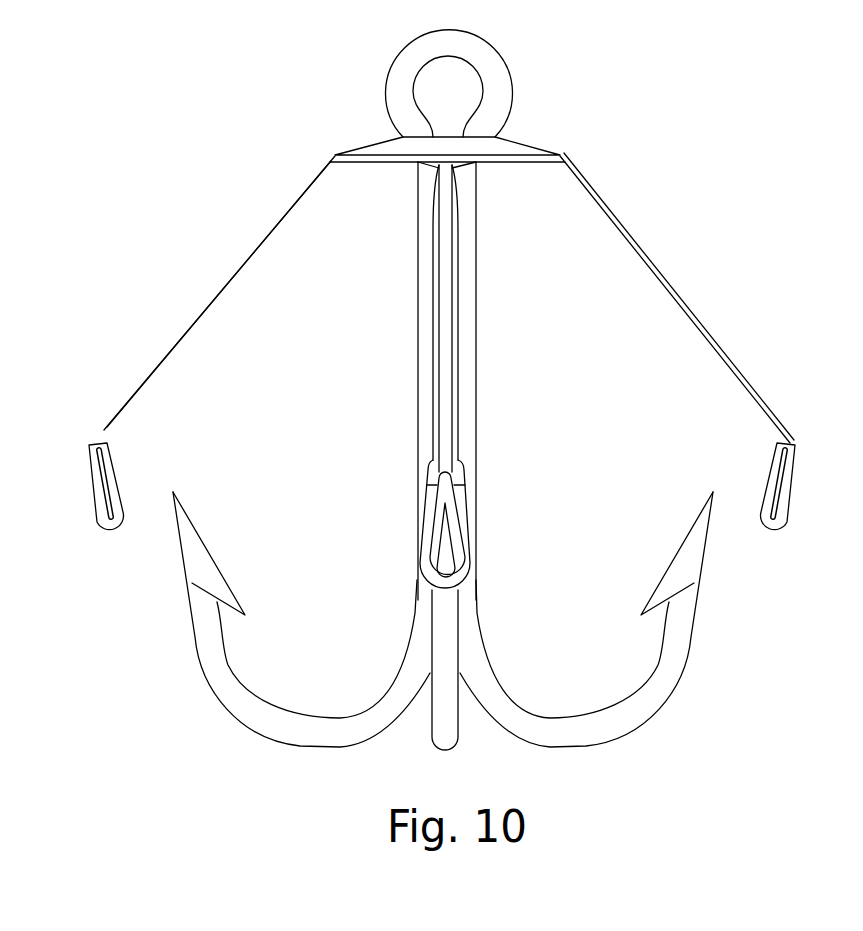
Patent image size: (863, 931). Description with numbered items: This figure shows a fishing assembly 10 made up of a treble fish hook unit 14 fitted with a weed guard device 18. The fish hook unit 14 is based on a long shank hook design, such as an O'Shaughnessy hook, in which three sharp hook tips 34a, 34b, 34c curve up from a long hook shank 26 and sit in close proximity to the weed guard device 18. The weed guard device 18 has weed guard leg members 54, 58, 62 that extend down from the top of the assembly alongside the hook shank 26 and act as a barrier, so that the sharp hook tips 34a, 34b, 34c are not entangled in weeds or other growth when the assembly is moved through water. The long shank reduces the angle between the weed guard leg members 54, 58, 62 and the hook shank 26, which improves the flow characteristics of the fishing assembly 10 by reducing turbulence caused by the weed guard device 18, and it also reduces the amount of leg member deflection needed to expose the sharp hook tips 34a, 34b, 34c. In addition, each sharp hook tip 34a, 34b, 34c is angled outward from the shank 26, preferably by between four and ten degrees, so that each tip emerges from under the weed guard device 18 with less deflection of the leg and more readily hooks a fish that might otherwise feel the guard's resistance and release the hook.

The fishing assembly 10 is at (305, 118).
The fish hook unit 14 is at (443, 593).
The weed guard device 18 is at (460, 341).
The hook shank 26 is at (423, 433).
The sharp hook tip 34a is at (197, 565).
The sharp hook tip 34b is at (447, 555).
The sharp hook tip 34c is at (693, 555).
The weed guard leg member 54 is at (196, 320).
The weed guard leg member 58 is at (447, 382).
The weed guard leg member 62 is at (717, 352).